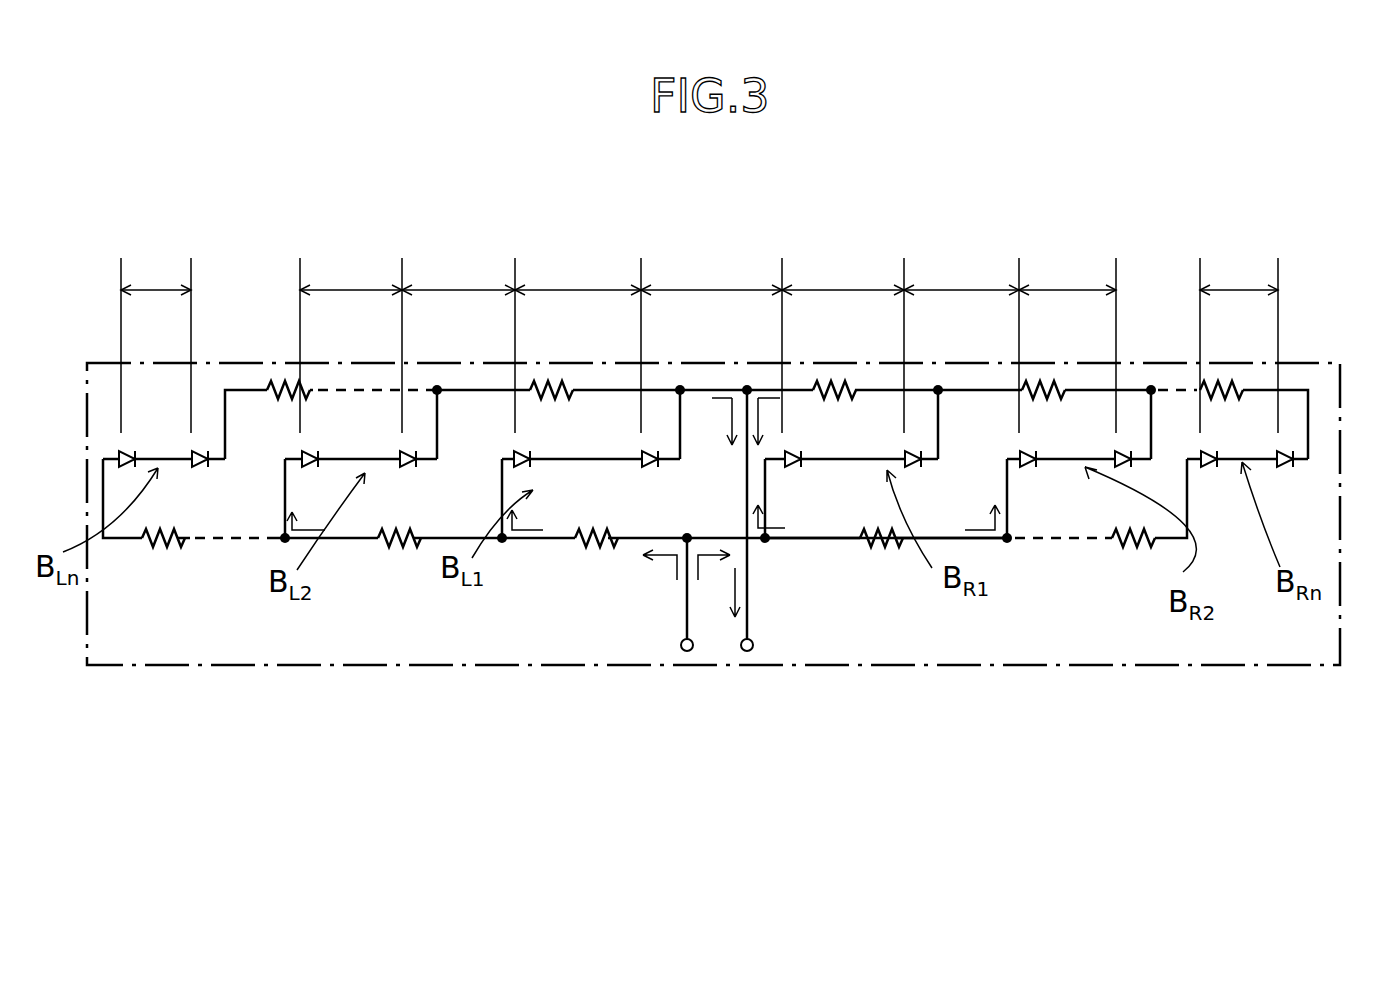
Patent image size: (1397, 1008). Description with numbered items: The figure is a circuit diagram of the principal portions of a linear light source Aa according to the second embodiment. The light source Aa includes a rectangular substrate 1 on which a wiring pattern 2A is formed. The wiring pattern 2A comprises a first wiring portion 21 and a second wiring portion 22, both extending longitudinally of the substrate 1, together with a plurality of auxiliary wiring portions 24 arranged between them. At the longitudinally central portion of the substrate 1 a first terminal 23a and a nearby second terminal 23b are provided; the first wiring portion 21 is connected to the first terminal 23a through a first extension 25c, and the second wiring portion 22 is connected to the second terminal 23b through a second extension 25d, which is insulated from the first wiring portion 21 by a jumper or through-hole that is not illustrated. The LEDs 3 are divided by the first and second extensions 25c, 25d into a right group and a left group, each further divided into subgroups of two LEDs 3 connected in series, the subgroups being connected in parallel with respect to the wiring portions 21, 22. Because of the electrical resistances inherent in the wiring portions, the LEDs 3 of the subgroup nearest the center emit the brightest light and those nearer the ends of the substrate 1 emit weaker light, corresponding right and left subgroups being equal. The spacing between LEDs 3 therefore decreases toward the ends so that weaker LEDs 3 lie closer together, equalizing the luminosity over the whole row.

The substrate 1 is at (1285, 645).
The wiring pattern 2A is at (833, 547).
The LED 3 is at (200, 468).
The first wiring portion 21 is at (525, 540).
The second wiring portion 22 is at (608, 388).
The first terminal 23a is at (689, 652).
The second terminal 23b is at (752, 652).
The auxiliary wiring portion 24 is at (330, 462).
The first extension 25c is at (686, 615).
The second extension 25d is at (752, 615).
The linear light source Aa is at (1182, 229).